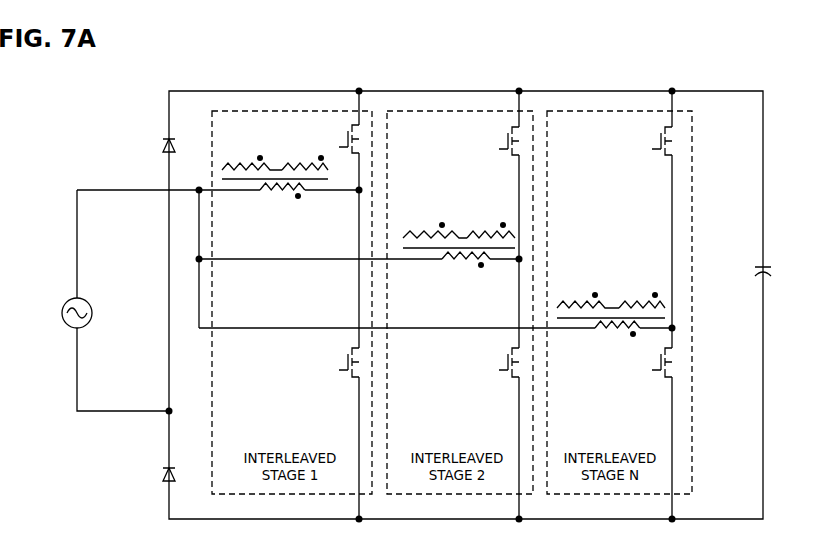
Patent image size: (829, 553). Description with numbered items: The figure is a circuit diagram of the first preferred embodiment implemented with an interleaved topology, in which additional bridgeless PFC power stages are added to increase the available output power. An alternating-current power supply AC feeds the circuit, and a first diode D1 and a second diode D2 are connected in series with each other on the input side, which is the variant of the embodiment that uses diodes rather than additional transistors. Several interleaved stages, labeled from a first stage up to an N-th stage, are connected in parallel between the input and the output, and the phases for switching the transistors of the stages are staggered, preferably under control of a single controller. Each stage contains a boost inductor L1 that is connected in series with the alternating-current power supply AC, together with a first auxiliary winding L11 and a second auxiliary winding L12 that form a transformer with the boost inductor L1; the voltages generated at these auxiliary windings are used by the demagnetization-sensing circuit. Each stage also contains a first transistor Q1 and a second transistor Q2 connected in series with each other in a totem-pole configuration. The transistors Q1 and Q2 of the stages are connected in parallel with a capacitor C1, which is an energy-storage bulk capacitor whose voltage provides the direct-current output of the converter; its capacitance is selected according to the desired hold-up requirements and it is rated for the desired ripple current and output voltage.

The alternating-current power supply AC is at (62, 313).
The first diode D1 is at (154, 148).
The second diode D2 is at (154, 477).
The capacitor C1 is at (750, 271).
The first transistor Q1 is at (494, 140).
The second transistor Q2 is at (493, 363).
The first auxiliary winding L11 is at (420, 228).
The second auxiliary winding L12 is at (443, 233).
The boost inductor L1 is at (450, 266).